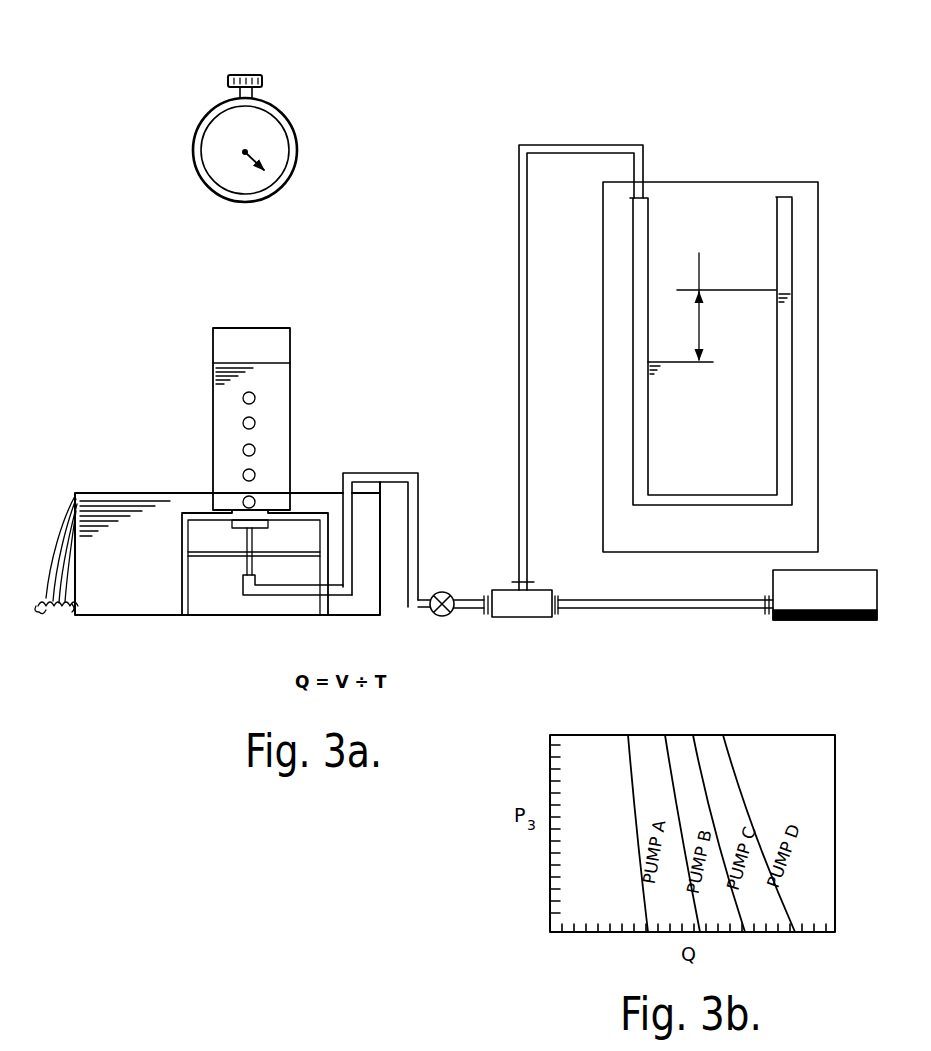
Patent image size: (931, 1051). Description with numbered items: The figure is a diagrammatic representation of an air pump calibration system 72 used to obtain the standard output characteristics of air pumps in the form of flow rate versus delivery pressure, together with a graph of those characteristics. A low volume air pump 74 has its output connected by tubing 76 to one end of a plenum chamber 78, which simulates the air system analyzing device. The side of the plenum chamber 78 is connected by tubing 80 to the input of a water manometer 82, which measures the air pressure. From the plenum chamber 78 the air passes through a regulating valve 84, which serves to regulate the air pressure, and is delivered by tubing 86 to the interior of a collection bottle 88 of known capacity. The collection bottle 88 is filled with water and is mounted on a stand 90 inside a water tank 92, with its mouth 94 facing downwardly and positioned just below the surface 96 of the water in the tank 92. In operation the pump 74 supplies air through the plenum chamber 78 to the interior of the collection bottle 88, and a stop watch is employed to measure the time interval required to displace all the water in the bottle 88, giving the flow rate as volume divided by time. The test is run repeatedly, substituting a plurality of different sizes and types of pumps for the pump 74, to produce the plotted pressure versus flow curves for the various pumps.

The air pump calibration system 72 is at (179, 63).
The low volume air pump 74 is at (854, 569).
The tubing 76 is at (633, 598).
The plenum chamber 78 is at (503, 588).
The tubing 80 is at (515, 187).
The water manometer 82 is at (794, 320).
The regulating valve 84 is at (458, 577).
The tubing 86 is at (385, 472).
The collection bottle 88 is at (293, 392).
The stand 90 is at (179, 561).
The water tank 92 is at (272, 618).
The mouth 94 is at (240, 534).
The surface 96 is at (118, 494).